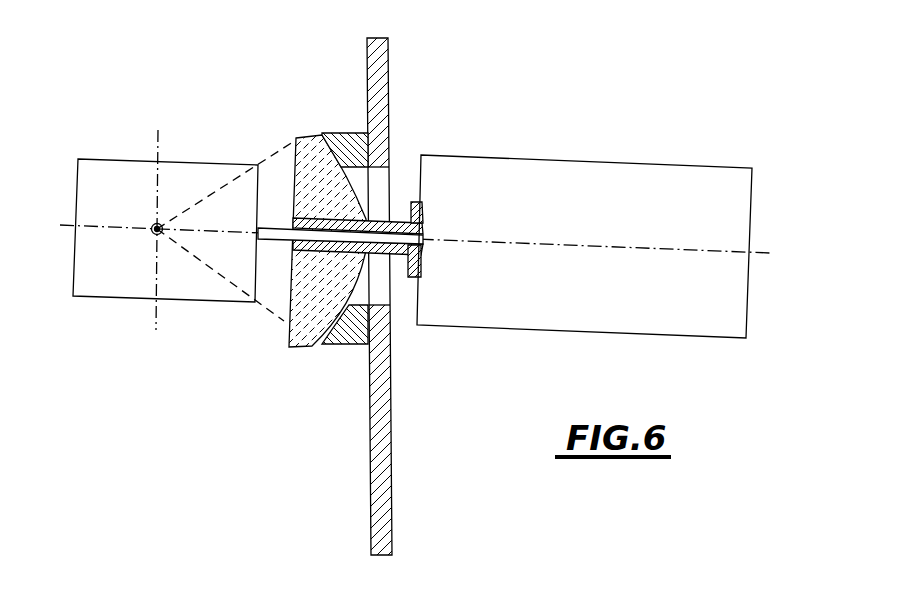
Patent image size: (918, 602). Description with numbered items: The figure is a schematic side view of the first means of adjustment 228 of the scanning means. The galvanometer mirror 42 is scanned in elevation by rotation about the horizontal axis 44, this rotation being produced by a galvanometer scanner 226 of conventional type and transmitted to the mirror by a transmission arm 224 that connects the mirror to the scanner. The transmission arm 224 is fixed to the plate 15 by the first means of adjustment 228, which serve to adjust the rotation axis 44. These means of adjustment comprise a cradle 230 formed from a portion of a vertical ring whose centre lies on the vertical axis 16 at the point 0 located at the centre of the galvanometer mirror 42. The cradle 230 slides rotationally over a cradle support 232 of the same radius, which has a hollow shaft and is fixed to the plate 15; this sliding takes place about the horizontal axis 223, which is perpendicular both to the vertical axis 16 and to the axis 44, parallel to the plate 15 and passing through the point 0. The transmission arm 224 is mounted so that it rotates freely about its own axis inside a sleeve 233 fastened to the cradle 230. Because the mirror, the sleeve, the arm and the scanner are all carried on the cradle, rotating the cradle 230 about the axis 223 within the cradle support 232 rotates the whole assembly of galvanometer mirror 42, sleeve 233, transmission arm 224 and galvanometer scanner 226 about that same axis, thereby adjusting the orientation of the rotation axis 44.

The plate 15 is at (377, 466).
The vertical axis 16 is at (153, 309).
The galvanometer mirror 42 is at (117, 170).
The horizontal axis 44 is at (757, 255).
The point 0 is at (150, 234).
The horizontal axis 223 is at (163, 224).
The transmission arm 224 is at (258, 226).
The galvanometer scanner 226 is at (590, 180).
The first means of adjustment 228 is at (323, 239).
The cradle 230 is at (307, 135).
The cradle support 232 is at (350, 133).
The sleeve 233 is at (415, 202).